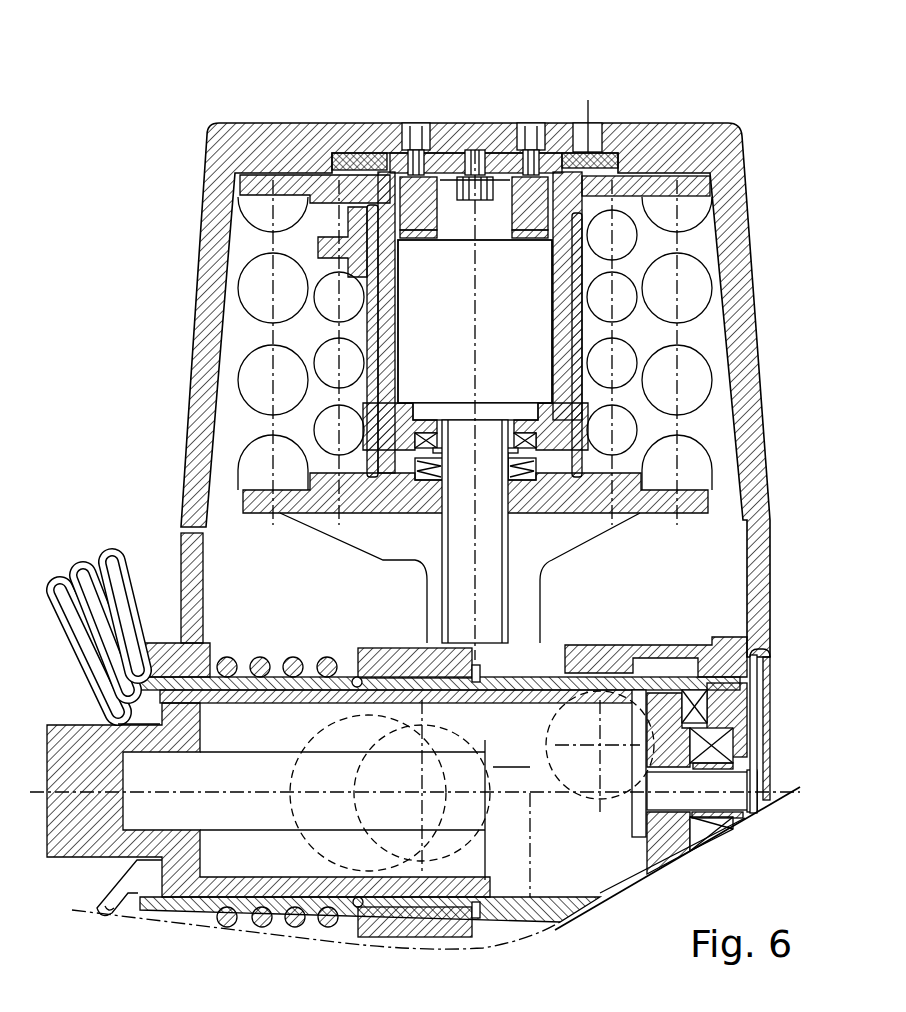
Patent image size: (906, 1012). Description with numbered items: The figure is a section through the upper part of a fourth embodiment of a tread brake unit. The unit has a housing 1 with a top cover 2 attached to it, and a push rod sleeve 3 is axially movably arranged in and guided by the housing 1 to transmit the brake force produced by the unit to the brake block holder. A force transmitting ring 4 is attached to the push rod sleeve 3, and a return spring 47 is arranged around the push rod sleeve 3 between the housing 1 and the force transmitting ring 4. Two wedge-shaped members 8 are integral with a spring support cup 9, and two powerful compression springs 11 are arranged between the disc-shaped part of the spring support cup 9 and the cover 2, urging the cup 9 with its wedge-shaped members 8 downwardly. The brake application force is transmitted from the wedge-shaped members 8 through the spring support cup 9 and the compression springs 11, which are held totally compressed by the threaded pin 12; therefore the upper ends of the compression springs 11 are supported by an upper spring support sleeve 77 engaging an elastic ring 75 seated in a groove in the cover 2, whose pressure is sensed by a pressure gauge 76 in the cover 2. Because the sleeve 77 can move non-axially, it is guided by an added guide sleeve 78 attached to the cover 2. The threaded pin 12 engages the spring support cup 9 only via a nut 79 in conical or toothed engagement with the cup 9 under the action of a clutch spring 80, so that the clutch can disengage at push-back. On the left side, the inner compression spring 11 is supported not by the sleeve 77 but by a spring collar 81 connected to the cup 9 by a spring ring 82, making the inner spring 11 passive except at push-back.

The housing 1 is at (183, 573).
The top cover 2 is at (265, 145).
The push rod sleeve 3 is at (173, 645).
The force transmitting ring 4 is at (380, 658).
The wedge-shaped members 8 is at (560, 527).
The spring support cup 9 is at (640, 502).
The compression springs 11 is at (616, 236).
The threaded pin 12 is at (495, 593).
The return spring 47 is at (258, 660).
The ring of elastic material 75 is at (350, 155).
The pressure gauge 76 is at (582, 140).
The upper spring support sleeve 77 is at (632, 185).
The guide sleeve 78 is at (389, 165).
The nut 79 is at (517, 498).
The clutch spring 80 is at (545, 455).
The spring collar 81 is at (318, 240).
The spring ring 82 is at (363, 270).